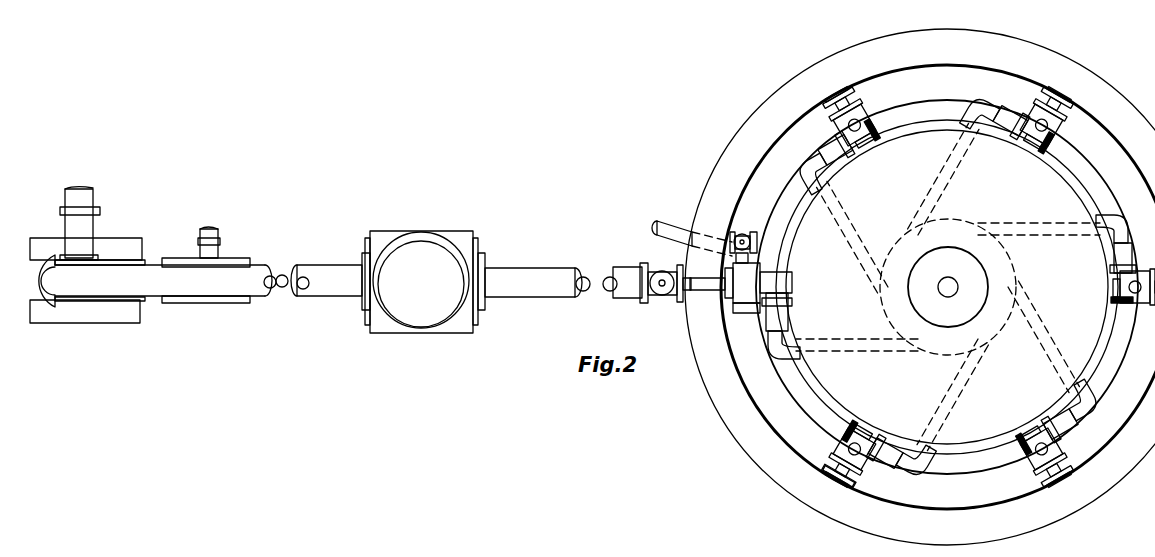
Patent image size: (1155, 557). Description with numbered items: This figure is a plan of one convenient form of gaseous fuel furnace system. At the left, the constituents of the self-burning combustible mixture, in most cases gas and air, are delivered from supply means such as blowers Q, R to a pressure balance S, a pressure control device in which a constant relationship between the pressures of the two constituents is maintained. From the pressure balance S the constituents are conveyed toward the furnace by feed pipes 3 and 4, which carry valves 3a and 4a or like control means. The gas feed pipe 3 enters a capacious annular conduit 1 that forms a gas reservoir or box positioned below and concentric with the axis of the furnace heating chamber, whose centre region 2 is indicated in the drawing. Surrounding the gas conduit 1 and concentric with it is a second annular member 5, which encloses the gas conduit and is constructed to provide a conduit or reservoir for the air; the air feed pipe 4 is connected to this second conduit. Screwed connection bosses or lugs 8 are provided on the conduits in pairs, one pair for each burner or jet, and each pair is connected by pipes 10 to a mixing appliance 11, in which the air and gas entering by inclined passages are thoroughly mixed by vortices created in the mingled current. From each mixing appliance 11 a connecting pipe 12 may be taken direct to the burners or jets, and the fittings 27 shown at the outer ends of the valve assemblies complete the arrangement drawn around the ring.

The blower R is at (123, 243).
The blower Q is at (238, 262).
The pressure balance S is at (428, 258).
The gas feed pipe 3 is at (290, 277).
The valve 3a is at (748, 232).
The air feed pipe 4 is at (265, 272).
The valve 4a is at (666, 290).
The annular gas conduit 1 is at (784, 218).
The central hub 2 is at (948, 287).
The second annular member 5 is at (920, 287).
The connection boss 8 is at (740, 303).
The pipe 10 is at (728, 282).
The mixing appliance 11 is at (790, 283).
The connecting pipe 12 is at (828, 184).
The valve handle flange 27 is at (770, 320).